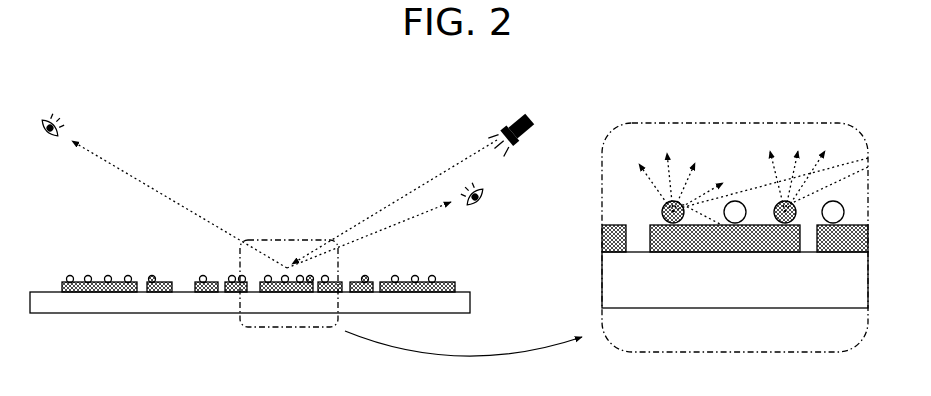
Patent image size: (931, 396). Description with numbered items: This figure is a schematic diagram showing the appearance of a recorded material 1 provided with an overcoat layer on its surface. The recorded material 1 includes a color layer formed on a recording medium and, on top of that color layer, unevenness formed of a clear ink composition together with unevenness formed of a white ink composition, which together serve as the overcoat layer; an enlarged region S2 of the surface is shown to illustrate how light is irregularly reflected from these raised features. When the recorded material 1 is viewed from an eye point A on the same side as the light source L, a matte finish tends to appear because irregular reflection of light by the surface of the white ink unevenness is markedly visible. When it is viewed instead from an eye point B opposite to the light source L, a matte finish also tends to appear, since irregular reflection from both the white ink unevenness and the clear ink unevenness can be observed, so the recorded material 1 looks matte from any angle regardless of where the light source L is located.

The recorded material 1 is at (74, 247).
The enlarged region S2 is at (283, 240).
The light source L is at (510, 118).
The eye point A is at (479, 202).
The eye point B is at (41, 121).